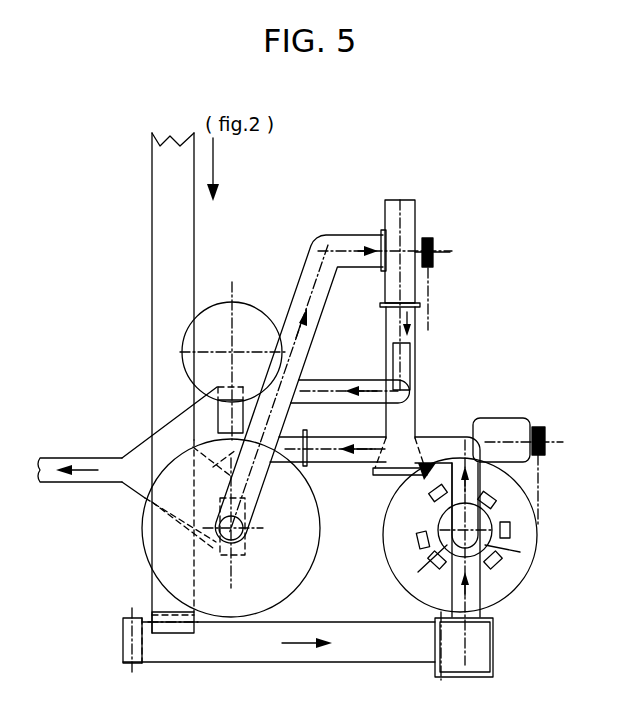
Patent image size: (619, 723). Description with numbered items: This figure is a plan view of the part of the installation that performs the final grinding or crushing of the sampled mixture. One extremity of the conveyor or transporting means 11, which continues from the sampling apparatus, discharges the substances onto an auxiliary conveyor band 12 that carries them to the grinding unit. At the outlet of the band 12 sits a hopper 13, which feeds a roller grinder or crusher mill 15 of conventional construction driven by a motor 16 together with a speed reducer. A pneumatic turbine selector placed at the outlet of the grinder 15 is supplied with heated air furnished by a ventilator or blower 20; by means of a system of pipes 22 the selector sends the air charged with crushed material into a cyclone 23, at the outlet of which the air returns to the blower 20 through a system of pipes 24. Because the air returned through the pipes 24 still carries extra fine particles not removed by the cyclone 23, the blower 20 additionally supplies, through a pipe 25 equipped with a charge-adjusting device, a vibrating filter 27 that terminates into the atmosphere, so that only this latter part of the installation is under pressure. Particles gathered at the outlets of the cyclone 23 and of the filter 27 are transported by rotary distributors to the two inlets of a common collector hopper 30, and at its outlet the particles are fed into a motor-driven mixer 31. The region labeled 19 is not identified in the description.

The conveyor or transporting means 11 is at (190, 240).
The auxiliary conveyor band 12 is at (265, 652).
The hopper 13 is at (478, 642).
The roller grinder or crusher mill 15 is at (508, 578).
The motor 16 is at (505, 430).
The vertical conduit 19 is at (386, 391).
The ventilator or blower 20 is at (405, 218).
The system of pipes 22 is at (336, 455).
The cyclone 23 is at (296, 568).
The system of pipes 24 is at (320, 292).
The pipe 25 is at (305, 395).
The vibrating filter 27 is at (242, 315).
The common collector hopper 30 is at (137, 477).
The mixer 31 is at (79, 454).